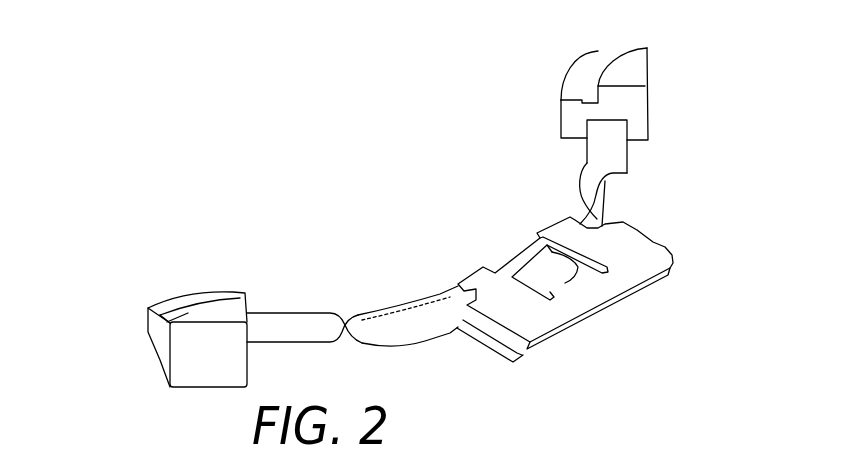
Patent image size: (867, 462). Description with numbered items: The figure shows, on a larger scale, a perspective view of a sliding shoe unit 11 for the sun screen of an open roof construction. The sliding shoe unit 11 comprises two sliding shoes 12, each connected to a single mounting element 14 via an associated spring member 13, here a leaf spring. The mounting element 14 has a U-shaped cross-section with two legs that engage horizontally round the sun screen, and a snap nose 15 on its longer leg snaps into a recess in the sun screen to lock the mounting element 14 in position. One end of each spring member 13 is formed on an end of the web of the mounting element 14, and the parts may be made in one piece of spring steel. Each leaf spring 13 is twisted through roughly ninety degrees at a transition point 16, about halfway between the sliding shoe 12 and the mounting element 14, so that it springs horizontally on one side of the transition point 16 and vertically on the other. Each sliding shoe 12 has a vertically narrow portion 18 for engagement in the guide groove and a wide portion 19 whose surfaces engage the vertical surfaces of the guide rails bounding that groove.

The sliding shoe unit 11 is at (681, 183).
The sliding shoe 12 is at (637, 122).
The spring member 13 is at (613, 152).
The mounting element 14 is at (635, 250).
The snap nose 15 is at (547, 283).
The transition point 16 is at (605, 183).
The narrow portion 18 is at (598, 50).
The wide portion 19 is at (633, 63).